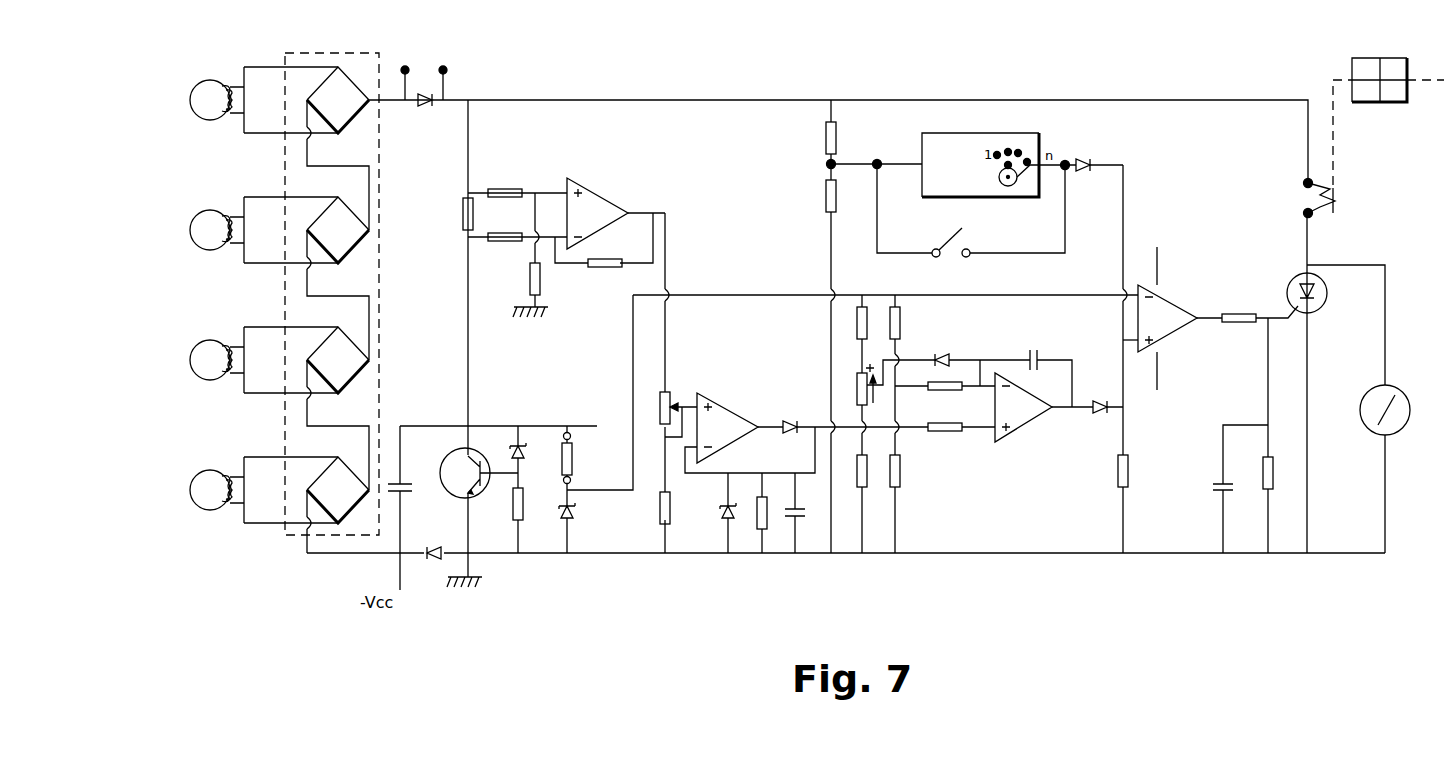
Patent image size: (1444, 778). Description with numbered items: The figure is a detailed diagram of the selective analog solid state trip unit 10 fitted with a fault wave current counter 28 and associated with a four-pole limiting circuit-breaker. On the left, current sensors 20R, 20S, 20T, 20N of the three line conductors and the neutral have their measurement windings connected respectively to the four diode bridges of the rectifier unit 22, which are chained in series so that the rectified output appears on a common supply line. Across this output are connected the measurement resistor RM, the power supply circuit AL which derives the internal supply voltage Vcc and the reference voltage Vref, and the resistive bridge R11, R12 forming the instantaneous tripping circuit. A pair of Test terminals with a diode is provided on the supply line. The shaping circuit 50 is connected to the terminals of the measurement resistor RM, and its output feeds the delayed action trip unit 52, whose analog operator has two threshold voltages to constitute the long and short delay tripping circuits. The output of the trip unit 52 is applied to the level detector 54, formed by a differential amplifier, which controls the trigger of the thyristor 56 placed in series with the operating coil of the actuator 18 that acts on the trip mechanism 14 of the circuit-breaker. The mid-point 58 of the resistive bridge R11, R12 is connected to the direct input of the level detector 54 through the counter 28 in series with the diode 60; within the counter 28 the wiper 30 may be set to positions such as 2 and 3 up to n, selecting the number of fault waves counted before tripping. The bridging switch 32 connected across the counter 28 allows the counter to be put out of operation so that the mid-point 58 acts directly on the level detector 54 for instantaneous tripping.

The selective solid state trip unit 10 is at (974, 612).
The trip mechanism 14 is at (1368, 58).
The actuator 18 is at (1346, 198).
The current sensor 20R is at (190, 100).
The current sensor 20S is at (190, 230).
The current sensor 20T is at (190, 360).
The current sensor 20N is at (190, 490).
The rectifier unit 22 is at (360, 27).
The fault wave current counter 28 is at (952, 165).
The switch position 2 is at (1008, 149).
The switch position 3 is at (1020, 150).
The switch wiper 30 is at (1016, 185).
The bridging switch 32 is at (950, 240).
The shaping circuit 50 is at (597, 190).
The delayed action trip unit 52 is at (1020, 432).
The level detector 54 is at (1176, 290).
The thyristor 56 is at (1322, 306).
The mid-point 58 is at (835, 162).
The diode 60 is at (1086, 158).
The power supply circuit AL is at (489, 532).
The measurement resistor RM is at (448, 277).
The resistor R11 is at (814, 132).
The resistor R12 is at (814, 226).
The test terminals Test is at (422, 75).
The reference voltage Vref is at (583, 489).
The supply voltage Vcc is at (503, 415).